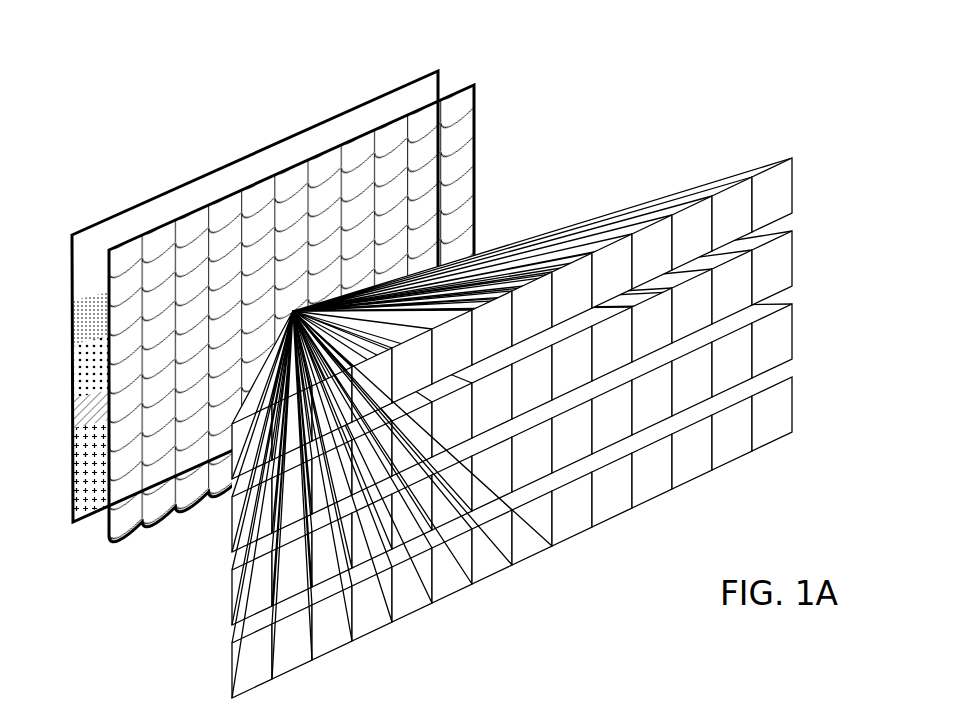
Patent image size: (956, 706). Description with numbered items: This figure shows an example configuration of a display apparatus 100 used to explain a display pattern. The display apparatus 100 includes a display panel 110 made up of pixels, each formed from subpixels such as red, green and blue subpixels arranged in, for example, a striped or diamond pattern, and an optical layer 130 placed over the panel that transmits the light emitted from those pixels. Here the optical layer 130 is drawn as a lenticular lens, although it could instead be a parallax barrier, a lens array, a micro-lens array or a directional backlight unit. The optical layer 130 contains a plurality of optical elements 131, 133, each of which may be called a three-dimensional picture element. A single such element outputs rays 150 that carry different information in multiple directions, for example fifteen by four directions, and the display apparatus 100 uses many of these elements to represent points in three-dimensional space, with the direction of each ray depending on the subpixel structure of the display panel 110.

The display apparatus 100 is at (234, 93).
The display panel 110 is at (425, 92).
The optical layer 130 is at (465, 125).
The optical element 131 is at (293, 311).
The optical element 133 is at (325, 294).
The rays 150 is at (800, 157).